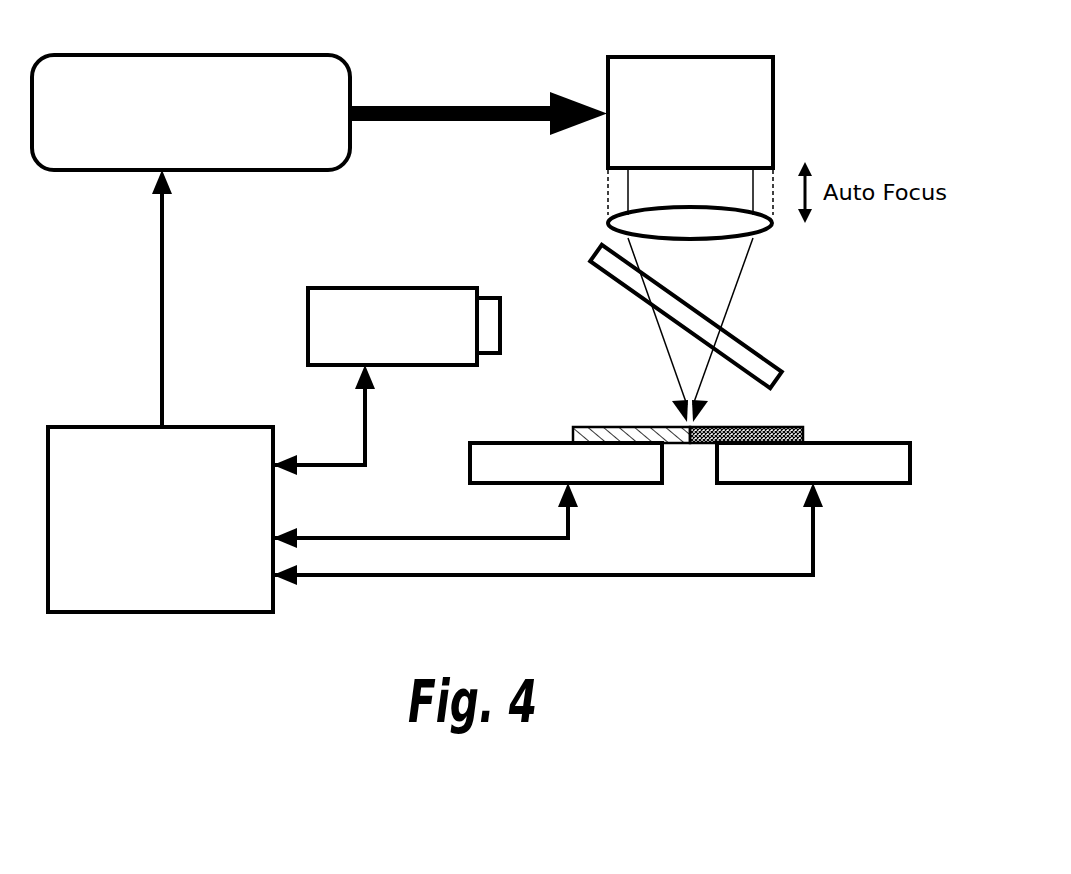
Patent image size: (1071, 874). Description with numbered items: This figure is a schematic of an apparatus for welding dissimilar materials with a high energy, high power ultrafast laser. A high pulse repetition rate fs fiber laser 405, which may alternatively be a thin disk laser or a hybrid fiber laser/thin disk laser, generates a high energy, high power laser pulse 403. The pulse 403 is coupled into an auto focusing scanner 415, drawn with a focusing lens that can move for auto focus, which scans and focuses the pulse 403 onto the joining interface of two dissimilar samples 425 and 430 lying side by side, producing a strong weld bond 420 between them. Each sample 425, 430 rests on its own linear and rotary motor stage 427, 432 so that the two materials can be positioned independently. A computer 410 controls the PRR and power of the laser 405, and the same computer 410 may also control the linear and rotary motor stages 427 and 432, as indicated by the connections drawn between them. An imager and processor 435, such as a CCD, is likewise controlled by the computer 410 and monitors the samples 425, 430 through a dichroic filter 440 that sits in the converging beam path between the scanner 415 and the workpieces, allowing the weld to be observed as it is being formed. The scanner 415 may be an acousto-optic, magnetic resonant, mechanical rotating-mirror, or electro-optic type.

The high energy, high power laser pulse 403 is at (478, 69).
The high pulse repetition rate fs fiber laser 405 is at (207, 127).
The computer 410 is at (179, 533).
The auto focusing scanner 415 is at (714, 127).
The weld bond 420 is at (662, 494).
The sample 425 is at (586, 415).
The linear and rotary motor stage 427 is at (527, 476).
The sample 430 is at (780, 418).
The linear and rotary motor stage 432 is at (896, 476).
The imager and processor 435 is at (416, 340).
The dichroic filter 440 is at (757, 345).